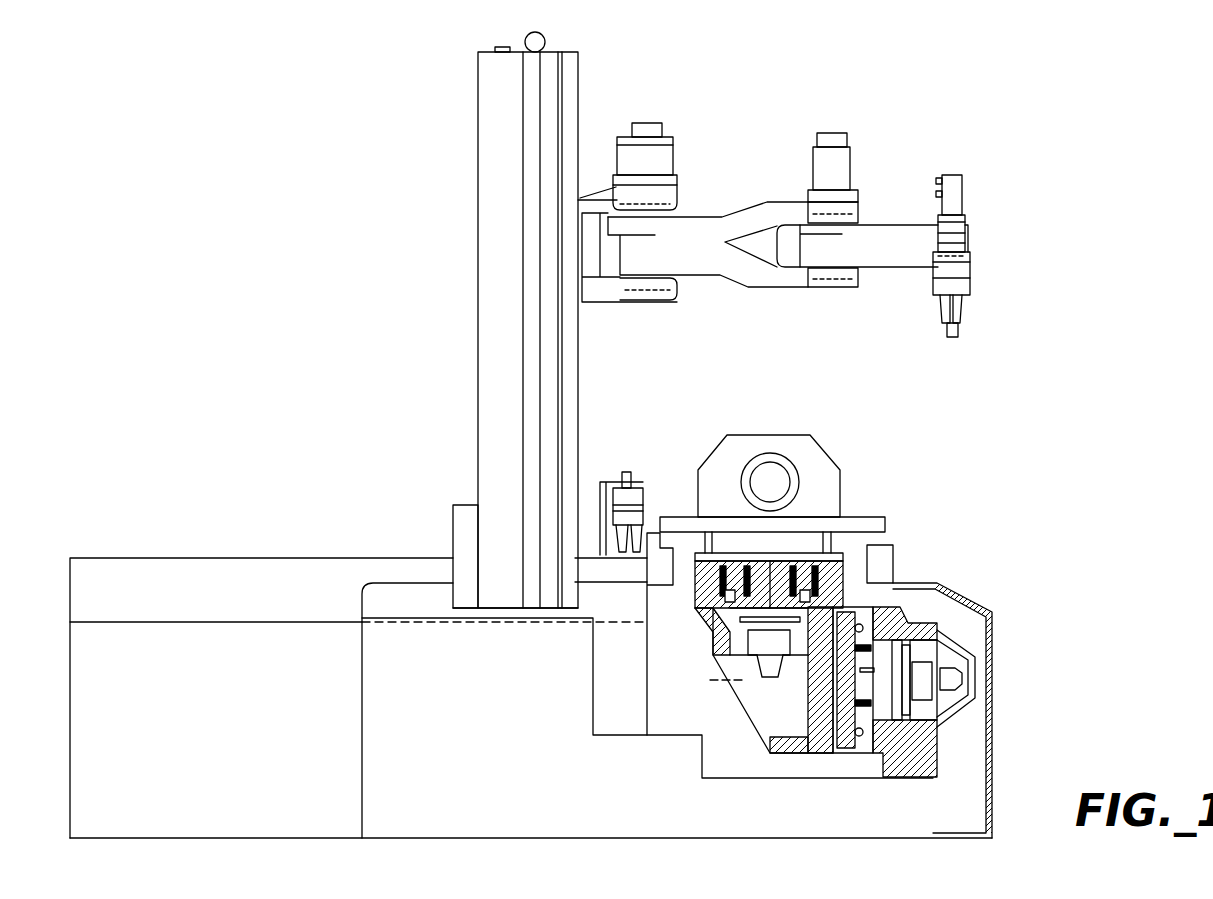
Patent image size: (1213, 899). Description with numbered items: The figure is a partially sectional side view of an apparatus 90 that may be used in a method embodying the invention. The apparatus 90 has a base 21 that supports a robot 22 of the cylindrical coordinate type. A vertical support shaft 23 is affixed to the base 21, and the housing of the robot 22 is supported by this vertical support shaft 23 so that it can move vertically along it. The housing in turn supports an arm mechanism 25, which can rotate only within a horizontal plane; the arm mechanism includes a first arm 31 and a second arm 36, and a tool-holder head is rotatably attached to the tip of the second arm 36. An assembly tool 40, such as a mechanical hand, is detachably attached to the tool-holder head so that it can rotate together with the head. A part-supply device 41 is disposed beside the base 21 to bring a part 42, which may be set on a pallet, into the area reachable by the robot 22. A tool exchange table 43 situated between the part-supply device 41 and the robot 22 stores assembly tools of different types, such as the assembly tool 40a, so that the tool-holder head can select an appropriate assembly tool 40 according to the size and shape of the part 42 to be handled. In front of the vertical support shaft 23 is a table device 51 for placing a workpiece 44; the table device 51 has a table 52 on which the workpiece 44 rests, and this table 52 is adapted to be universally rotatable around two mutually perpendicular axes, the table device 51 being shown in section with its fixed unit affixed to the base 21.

The apparatus 90 is at (377, 264).
The base 21 is at (495, 835).
The part-supply device 41 is at (231, 558).
The robot 22 is at (583, 123).
The vertical support shaft 23 is at (490, 284).
The arm mechanism 25 is at (787, 200).
The upper arm 31 is at (688, 263).
The second arm 36 is at (866, 259).
The assembly tool 40 is at (964, 288).
The part 42 is at (958, 332).
The tool exchange table 43 is at (608, 482).
The assembly tool 40a is at (632, 496).
The workpiece 44 is at (836, 487).
The table 52 is at (885, 522).
The table device 51 is at (843, 598).